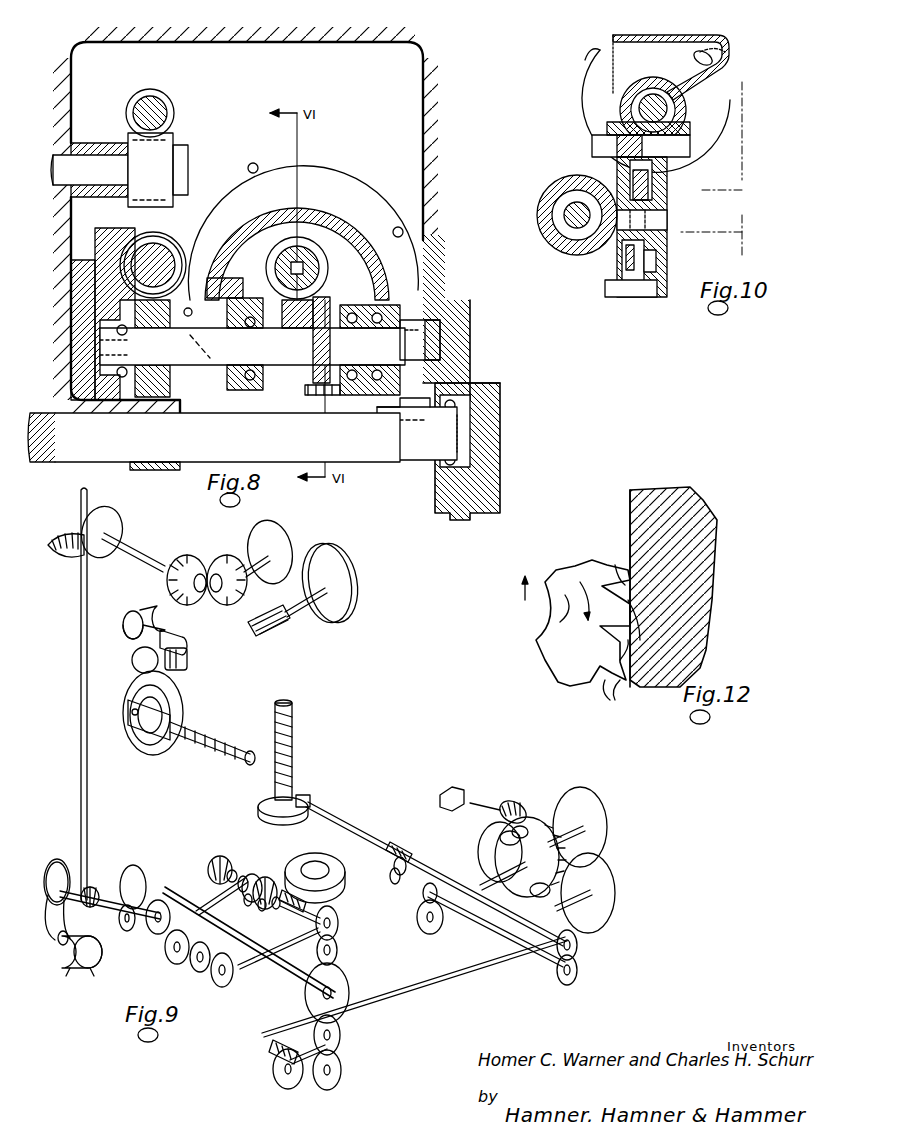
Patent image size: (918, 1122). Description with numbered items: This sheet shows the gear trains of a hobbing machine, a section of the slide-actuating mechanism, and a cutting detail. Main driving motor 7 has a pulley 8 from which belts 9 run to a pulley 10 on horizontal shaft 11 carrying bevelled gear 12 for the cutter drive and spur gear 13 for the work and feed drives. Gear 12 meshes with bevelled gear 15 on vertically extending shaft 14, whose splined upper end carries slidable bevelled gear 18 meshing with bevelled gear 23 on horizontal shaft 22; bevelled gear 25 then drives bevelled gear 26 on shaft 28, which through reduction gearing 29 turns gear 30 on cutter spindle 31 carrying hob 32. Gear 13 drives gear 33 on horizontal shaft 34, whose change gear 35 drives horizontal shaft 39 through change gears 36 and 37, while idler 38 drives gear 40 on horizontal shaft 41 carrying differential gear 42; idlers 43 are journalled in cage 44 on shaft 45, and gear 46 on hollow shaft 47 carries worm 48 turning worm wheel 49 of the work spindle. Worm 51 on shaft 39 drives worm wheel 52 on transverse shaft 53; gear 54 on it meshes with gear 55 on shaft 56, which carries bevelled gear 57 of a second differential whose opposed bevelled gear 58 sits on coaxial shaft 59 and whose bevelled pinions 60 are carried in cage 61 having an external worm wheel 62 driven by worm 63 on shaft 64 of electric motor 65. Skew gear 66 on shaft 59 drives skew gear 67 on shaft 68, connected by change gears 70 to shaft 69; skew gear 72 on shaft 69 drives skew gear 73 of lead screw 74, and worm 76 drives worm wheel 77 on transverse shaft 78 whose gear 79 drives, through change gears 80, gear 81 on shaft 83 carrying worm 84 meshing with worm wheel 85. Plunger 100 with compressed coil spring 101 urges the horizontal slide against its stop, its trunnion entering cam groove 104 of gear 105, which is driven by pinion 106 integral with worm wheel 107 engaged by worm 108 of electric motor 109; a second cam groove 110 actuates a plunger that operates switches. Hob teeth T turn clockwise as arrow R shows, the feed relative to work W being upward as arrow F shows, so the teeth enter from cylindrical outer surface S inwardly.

In FIG. 9, the main driving motor 7 is at (62, 952).
In FIG. 9, the pulley 8 is at (58, 944).
In FIG. 9, the belts 9 is at (52, 920).
In FIG. 9, the pulley 10 is at (57, 874).
In FIG. 9, the horizontal shaft 11 is at (60, 860).
In FIG. 9, the bevelled gear 12 is at (100, 896).
In FIG. 9, the spur gear 13 is at (125, 930).
In FIG. 9, the vertically extending shaft 14 is at (80, 600).
In FIG. 9, the bevelled gear 15 is at (94, 888).
In FIG. 9, the bevelled gear 18 is at (66, 554).
In FIG. 9, the horizontal shaft 22 is at (128, 546).
In FIG. 9, the bevelled gear 23 is at (112, 517).
In FIG. 9, the bevelled gear 25 is at (182, 560).
In FIG. 9, the bevelled gear 26 is at (203, 572).
In FIG. 9, the shaft 28 is at (238, 560).
In FIG. 9, the reduction gearing 29 is at (270, 527).
In FIG. 9, the gear 30 is at (330, 547).
In FIG. 9, the cutter spindle 31 is at (306, 610).
In FIG. 12, the hob 32 is at (575, 568).
In FIG. 9, the hob 32 is at (268, 636).
In FIG. 9, the gear 33 is at (138, 868).
In FIG. 9, the horizontal shaft 34 is at (249, 942).
In FIG. 9, the change gear 35 is at (350, 990).
In FIG. 9, the change gear 36 is at (340, 1020).
In FIG. 9, the change gear 37 is at (342, 1075).
In FIG. 9, the idler 38 is at (338, 947).
In FIG. 9, the horizontal shaft 39 is at (304, 1040).
In FIG. 9, the gear 40 is at (339, 925).
In FIG. 9, the horizontal shaft 41 is at (290, 915).
In FIG. 9, the gear 42 is at (245, 904).
In FIG. 9, the idlers 43 is at (272, 878).
In FIG. 9, the cage 44 is at (256, 874).
In FIG. 9, the shaft 45 is at (244, 875).
In FIG. 9, the gear 46 is at (260, 910).
In FIG. 9, the hollow shaft 47 is at (276, 909).
In FIG. 9, the worm 48 is at (298, 888).
In FIG. 9, the worm wheel 49 is at (332, 866).
In FIG. 9, the worm 51 is at (270, 1046).
In FIG. 9, the worm wheel 52 is at (278, 1082).
In FIG. 8, the shaft 53 is at (214, 441).
In FIG. 9, the shaft 53 is at (408, 1005).
In FIG. 8, the gear 54 is at (405, 470).
In FIG. 9, the gear 54 is at (604, 912).
In FIG. 8, the gear 55 is at (455, 380).
In FIG. 9, the gear 55 is at (592, 810).
In FIG. 8, the shaft 56 is at (442, 342).
In FIG. 9, the shaft 56 is at (598, 838).
In FIG. 8, the bevelled gear 57 is at (355, 305).
In FIG. 9, the bevelled gear 57 is at (550, 838).
In FIG. 8, the bevelled gear 58 is at (290, 346).
In FIG. 9, the bevelled gear 58 is at (495, 855).
In FIG. 8, the shaft 59 is at (215, 328).
In FIG. 9, the shaft 59 is at (496, 876).
In FIG. 8, the bevelled pinions 60 is at (329, 330).
In FIG. 9, the bevelled pinions 60 is at (500, 836).
In FIG. 8, the cage 61 is at (340, 295).
In FIG. 9, the cage 61 is at (526, 828).
In FIG. 8, the worm wheel 62 is at (312, 396).
In FIG. 8, the worm 63 is at (268, 256).
In FIG. 9, the worm 63 is at (524, 806).
In FIG. 8, the shaft 64 is at (306, 252).
In FIG. 9, the shaft 64 is at (500, 798).
In FIG. 9, the electric motor 65 is at (452, 797).
In FIG. 8, the skew gear 66 is at (170, 385).
In FIG. 9, the skew gear 66 is at (424, 930).
In FIG. 8, the skew gear 67 is at (100, 283).
In FIG. 9, the skew gear 67 is at (424, 895).
In FIG. 8, the shaft 68 is at (140, 258).
In FIG. 9, the shaft 68 is at (466, 920).
In FIG. 8, the shaft 69 is at (160, 106).
In FIG. 9, the shaft 69 is at (420, 866).
In FIG. 9, the change gears 70 is at (580, 955).
In FIG. 9, the skew gear 72 is at (306, 795).
In FIG. 9, the skew gear 73 is at (283, 813).
In FIG. 9, the lead screw 74 is at (290, 735).
In FIG. 8, the worm 76 is at (174, 115).
In FIG. 9, the worm 76 is at (406, 844).
In FIG. 8, the worm wheel 77 is at (162, 158).
In FIG. 9, the worm wheel 77 is at (394, 866).
In FIG. 8, the transverse horizontal shaft 78 is at (89, 170).
In FIG. 9, the transverse horizontal shaft 78 is at (392, 884).
In FIG. 9, the gear 79 is at (232, 978).
In FIG. 9, the change gears 80 is at (188, 968).
In FIG. 9, the gear 81 is at (150, 932).
In FIG. 9, the shaft 83 is at (200, 895).
In FIG. 9, the worm 84 is at (210, 862).
In FIG. 9, the worm wheel 85 is at (212, 850).
In FIG. 10, the plunger 100 is at (552, 192).
In FIG. 9, the plunger 100 is at (150, 755).
In FIG. 10, the compressed coil spring 101 is at (550, 240).
In FIG. 9, the compressed coil spring 101 is at (215, 738).
In FIG. 10, the cam groove 104 is at (620, 265).
In FIG. 9, the cam groove 104 is at (132, 690).
In FIG. 10, the gear 105 is at (620, 297).
In FIG. 9, the gear 105 is at (180, 705).
In FIG. 10, the pinion 106 is at (592, 126).
In FIG. 9, the pinion 106 is at (132, 663).
In FIG. 10, the worm wheel 107 is at (668, 190).
In FIG. 9, the worm wheel 107 is at (187, 662).
In FIG. 10, the worm 108 is at (668, 112).
In FIG. 9, the worm 108 is at (175, 634).
In FIG. 10, the electric motor 109 is at (590, 90).
In FIG. 9, the electric motor 109 is at (140, 612).
In FIG. 10, the cam groove 110 is at (656, 262).
In FIG. 12, the work W is at (672, 498).
In FIG. 12, the cylindrical outer surface S is at (630, 512).
In FIG. 12, the teeth T is at (618, 562).
In FIG. 12, the arrow R is at (581, 601).
In FIG. 12, the arrow F is at (523, 598).